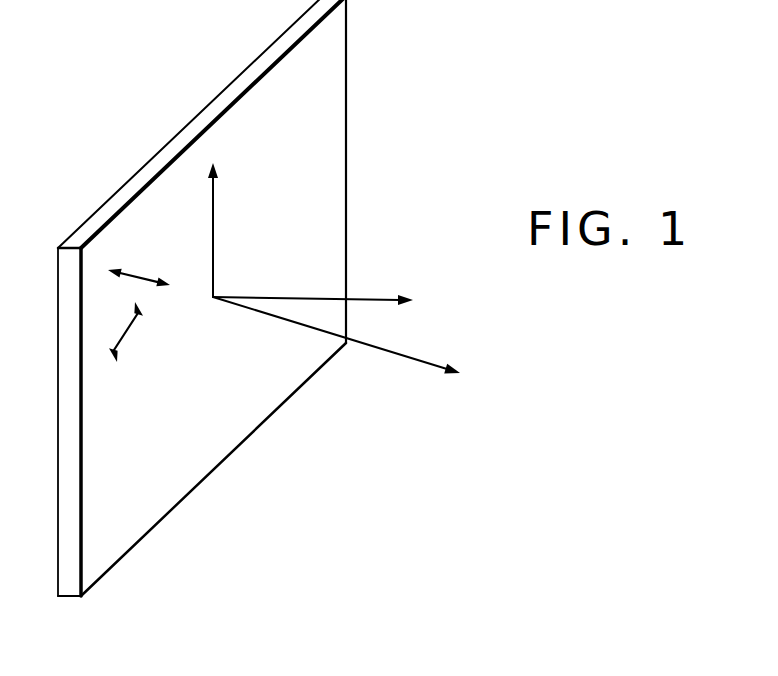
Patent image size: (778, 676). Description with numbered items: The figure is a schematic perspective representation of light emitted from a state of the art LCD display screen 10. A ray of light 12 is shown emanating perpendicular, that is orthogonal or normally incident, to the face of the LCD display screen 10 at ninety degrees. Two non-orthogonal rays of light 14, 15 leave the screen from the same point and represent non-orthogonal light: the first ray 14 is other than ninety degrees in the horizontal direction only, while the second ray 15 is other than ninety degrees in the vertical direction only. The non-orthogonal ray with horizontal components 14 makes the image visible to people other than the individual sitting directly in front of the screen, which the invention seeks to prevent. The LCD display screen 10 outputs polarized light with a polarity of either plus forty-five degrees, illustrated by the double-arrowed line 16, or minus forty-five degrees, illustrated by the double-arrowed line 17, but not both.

The LCD display screen 10 is at (147, 433).
The ray of light 12 is at (432, 358).
The first non-orthogonal ray 14 is at (383, 300).
The second non-orthogonal ray 15 is at (213, 194).
The double-arrowed line 16 is at (143, 273).
The double-arrowed line 17 is at (125, 332).